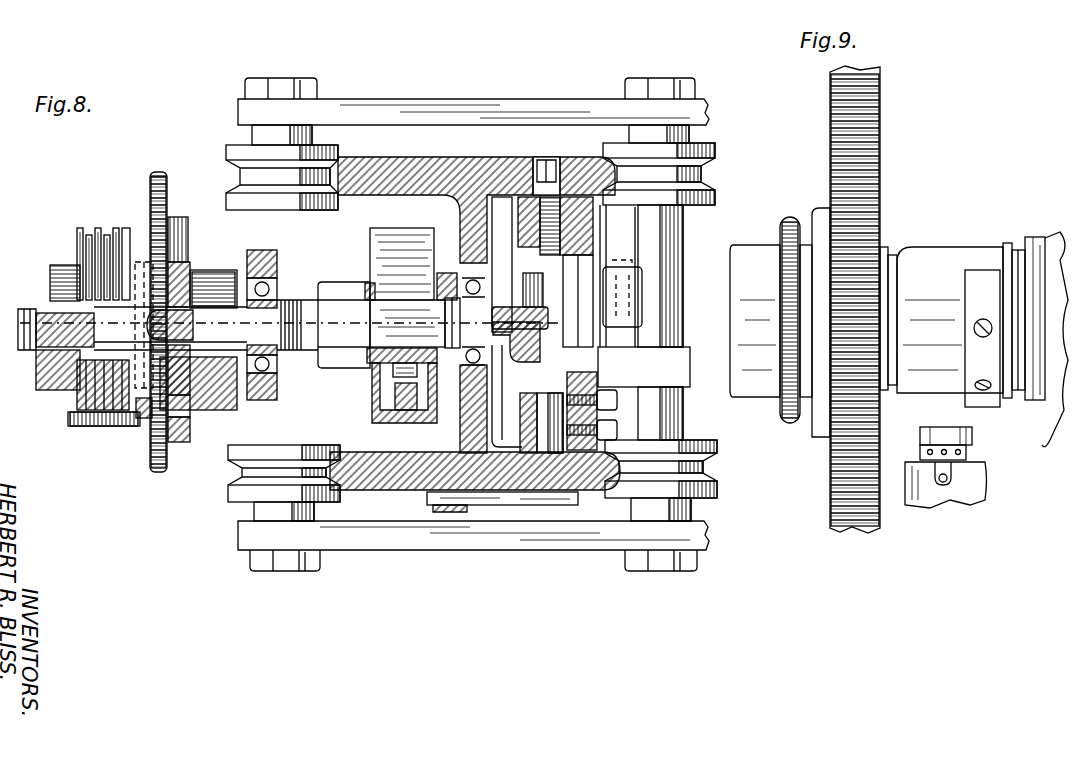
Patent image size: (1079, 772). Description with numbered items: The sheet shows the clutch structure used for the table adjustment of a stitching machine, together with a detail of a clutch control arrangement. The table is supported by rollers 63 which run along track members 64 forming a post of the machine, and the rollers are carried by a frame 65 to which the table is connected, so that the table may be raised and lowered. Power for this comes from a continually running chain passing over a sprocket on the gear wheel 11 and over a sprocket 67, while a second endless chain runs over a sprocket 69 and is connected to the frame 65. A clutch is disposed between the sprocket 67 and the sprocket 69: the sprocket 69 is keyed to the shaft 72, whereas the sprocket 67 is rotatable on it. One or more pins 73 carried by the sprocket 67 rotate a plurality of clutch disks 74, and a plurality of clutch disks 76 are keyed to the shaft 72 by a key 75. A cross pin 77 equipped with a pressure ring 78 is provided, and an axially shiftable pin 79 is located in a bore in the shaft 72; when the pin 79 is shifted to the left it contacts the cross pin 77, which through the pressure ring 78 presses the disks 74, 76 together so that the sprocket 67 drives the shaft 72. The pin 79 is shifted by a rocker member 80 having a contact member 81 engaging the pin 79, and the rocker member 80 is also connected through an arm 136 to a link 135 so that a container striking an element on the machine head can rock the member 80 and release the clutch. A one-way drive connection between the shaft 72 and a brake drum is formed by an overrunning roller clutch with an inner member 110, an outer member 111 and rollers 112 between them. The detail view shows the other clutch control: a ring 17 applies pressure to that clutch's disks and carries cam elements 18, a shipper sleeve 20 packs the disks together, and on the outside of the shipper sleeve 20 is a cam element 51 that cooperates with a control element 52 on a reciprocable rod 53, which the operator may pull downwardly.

In FIG. 9, the gear wheel 11 is at (880, 117).
In FIG. 9, the ring 17 is at (885, 247).
In FIG. 9, the cam elements 18 is at (893, 255).
In FIG. 9, the shipper sleeve 20 is at (945, 260).
In FIG. 9, the cam element 51 is at (980, 320).
In FIG. 9, the control element 52 is at (920, 441).
In FIG. 9, the reciprocable rod 53 is at (968, 458).
In FIG. 8, the rollers 63 is at (703, 166).
In FIG. 8, the track members 64 is at (598, 470).
In FIG. 8, the frame 65 is at (569, 108).
In FIG. 8, the sprocket 67 is at (167, 200).
In FIG. 8, the sprocket 69 is at (518, 284).
In FIG. 8, the shaft 72 is at (400, 318).
In FIG. 8, the pins 73 is at (76, 426).
In FIG. 8, the clutch disks 74 is at (79, 228).
In FIG. 8, the key 75 is at (52, 352).
In FIG. 8, the clutch disks 76 is at (126, 228).
In FIG. 8, the cross pin 77 is at (165, 365).
In FIG. 8, the pressure ring 78 is at (138, 418).
In FIG. 8, the axially shiftable pin 79 is at (195, 318).
In FIG. 8, the rocker member 80 is at (585, 223).
In FIG. 8, the contact member 81 is at (556, 306).
In FIG. 8, the inner member 110 is at (372, 362).
In FIG. 8, the outer member 111 is at (396, 403).
In FIG. 8, the rollers 112 is at (405, 421).
In FIG. 8, the link 135 is at (449, 513).
In FIG. 8, the arm 136 is at (497, 505).